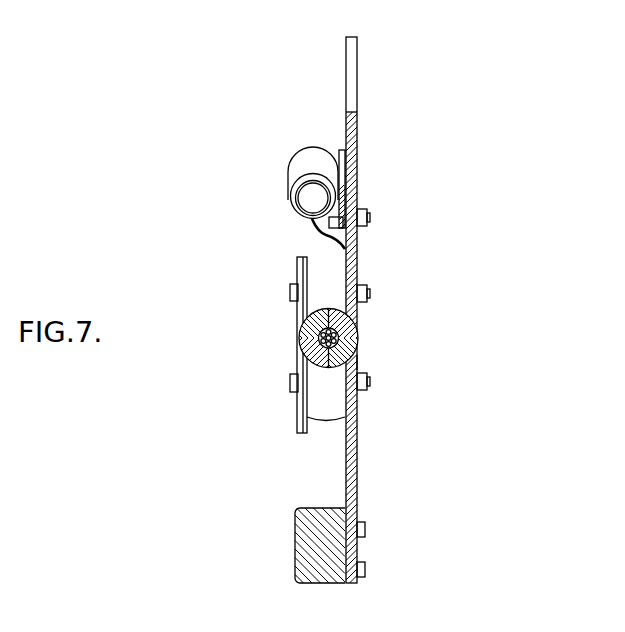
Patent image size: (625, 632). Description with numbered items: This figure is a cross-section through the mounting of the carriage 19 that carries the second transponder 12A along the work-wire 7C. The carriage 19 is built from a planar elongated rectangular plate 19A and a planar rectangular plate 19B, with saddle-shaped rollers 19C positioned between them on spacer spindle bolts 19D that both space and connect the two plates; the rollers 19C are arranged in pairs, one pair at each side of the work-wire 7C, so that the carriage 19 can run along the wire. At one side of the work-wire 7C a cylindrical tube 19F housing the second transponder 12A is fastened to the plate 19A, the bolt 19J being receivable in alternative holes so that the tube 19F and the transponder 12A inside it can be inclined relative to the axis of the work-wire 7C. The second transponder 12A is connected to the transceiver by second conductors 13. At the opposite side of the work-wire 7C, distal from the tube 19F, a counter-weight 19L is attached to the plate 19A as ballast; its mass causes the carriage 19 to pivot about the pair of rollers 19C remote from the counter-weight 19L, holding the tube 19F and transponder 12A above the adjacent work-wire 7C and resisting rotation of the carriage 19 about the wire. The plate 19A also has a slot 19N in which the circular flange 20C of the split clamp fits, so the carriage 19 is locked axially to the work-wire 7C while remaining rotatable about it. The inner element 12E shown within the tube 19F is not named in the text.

The carriage 19 is at (512, 317).
The planar elongated rectangular plate 19A is at (357, 147).
The planar rectangular plate 19B is at (298, 268).
The saddle-shaped rollers 19C is at (332, 268).
The spacer spindle bolts 19D is at (291, 294).
The cylindrical tube 19F is at (298, 165).
The bolt 19J is at (313, 197).
The counter-weight 19L is at (310, 546).
The slot 19N is at (357, 362).
The second transponder 12A is at (291, 184).
The inner tube 12E is at (298, 206).
The second conductors 13 is at (326, 240).
The circular flange 20C is at (307, 330).
The work-wire 7C is at (318, 340).